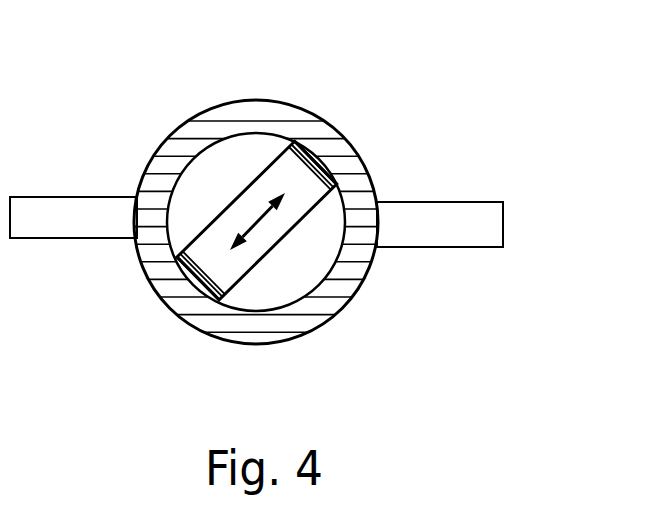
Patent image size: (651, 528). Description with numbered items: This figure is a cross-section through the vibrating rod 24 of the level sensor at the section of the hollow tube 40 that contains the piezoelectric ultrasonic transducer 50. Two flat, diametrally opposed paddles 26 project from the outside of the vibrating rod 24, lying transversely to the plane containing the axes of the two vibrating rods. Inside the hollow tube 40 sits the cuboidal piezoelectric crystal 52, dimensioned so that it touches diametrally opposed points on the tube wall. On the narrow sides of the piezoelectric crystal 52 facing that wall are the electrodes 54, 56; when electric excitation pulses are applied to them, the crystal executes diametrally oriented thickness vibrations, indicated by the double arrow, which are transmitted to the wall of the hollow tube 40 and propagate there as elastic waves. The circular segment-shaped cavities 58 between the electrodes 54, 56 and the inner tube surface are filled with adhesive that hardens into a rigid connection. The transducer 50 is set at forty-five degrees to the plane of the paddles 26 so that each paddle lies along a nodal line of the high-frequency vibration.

The vibrating rod 24 is at (135, 138).
The paddles 26 is at (43, 195).
The hollow tube 40 is at (267, 117).
The piezoelectric ultrasonic transducer 50 is at (213, 173).
The piezoelectric crystal 52 is at (272, 232).
The electrode 54 is at (327, 162).
The electrode 56 is at (198, 292).
The circular segment-shaped cavities 58 is at (313, 153).